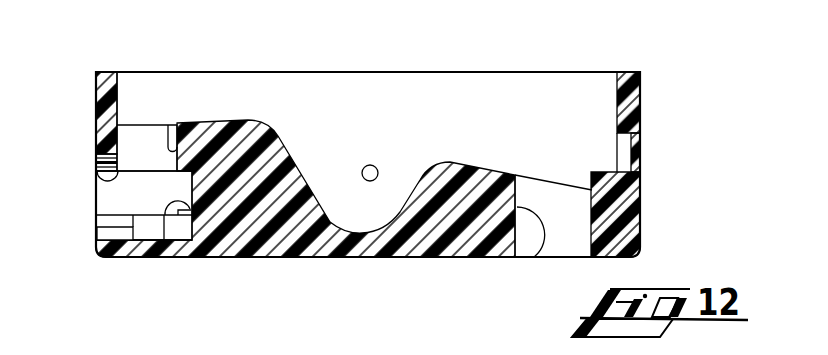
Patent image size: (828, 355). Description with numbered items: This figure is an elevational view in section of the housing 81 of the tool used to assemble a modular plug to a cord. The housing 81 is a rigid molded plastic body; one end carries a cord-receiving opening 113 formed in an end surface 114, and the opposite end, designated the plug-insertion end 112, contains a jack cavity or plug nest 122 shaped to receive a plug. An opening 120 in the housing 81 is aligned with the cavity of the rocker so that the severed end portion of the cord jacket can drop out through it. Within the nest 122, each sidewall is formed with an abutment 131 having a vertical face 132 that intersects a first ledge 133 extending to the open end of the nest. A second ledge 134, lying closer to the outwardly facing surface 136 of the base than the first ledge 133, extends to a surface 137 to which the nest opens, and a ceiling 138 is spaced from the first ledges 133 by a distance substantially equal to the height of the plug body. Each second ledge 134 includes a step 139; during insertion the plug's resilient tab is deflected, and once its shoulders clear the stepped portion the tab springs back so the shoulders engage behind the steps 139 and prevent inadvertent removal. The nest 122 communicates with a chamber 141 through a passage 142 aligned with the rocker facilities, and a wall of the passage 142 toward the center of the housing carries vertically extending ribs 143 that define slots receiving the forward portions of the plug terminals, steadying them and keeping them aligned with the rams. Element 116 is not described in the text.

The housing 81 is at (352, 263).
The plug-insertion end 112 is at (96, 148).
The cord-receiving opening 113 is at (637, 137).
The end surface 114 is at (640, 93).
The end block 116 is at (596, 174).
The opening 120 is at (540, 259).
The plug nest 122 is at (155, 188).
The abutment 131 is at (165, 217).
The vertical face 132 is at (168, 217).
The first ledge 133 is at (145, 210).
The second ledge 134 is at (117, 221).
The outwardly facing surface 136 is at (143, 250).
The surface 137 is at (97, 240).
The ceiling 138 is at (95, 168).
The step 139 is at (147, 220).
The chamber 141 is at (328, 94).
The passage 142 is at (137, 135).
The ribs 143 is at (170, 138).